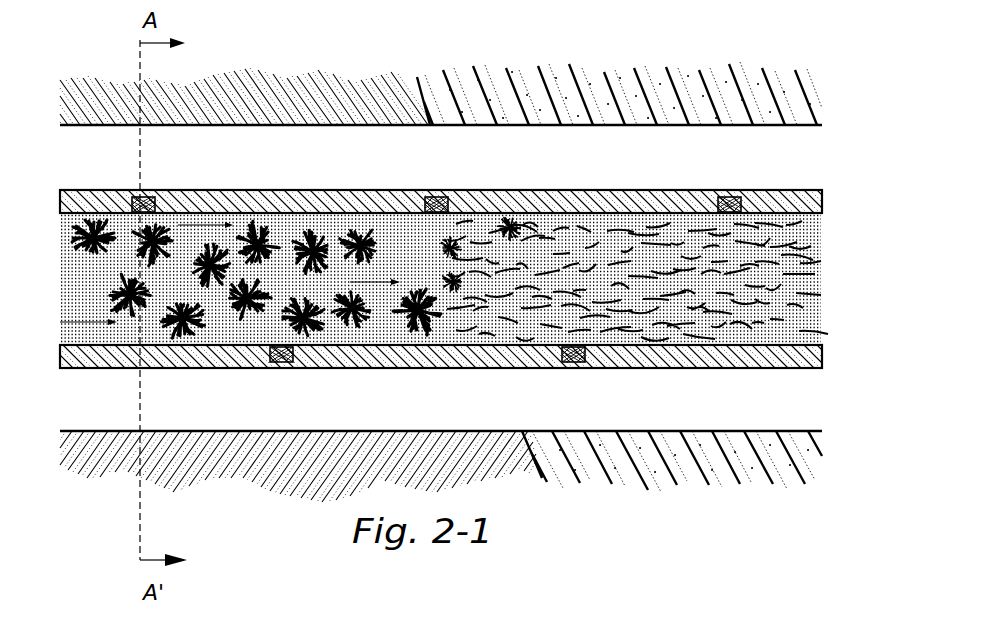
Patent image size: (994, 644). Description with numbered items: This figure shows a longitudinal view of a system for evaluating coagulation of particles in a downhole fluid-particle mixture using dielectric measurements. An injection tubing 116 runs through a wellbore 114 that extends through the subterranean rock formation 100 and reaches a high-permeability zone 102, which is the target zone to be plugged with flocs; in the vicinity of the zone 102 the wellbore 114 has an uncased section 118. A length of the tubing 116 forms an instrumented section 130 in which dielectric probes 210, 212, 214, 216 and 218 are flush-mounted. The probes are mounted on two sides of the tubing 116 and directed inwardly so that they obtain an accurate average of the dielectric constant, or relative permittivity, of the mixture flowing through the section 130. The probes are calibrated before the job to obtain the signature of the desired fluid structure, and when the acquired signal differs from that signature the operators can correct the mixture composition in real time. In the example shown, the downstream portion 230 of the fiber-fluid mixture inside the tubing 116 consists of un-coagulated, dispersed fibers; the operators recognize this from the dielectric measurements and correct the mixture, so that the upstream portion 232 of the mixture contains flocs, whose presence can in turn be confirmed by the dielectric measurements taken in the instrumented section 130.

The subterranean rock formation 100 is at (274, 104).
The high-permeability zone 102 is at (709, 115).
The wellbore 114 is at (323, 125).
The injection tubing 116 is at (432, 358).
The uncased section 118 is at (683, 432).
The instrumented section 130 is at (284, 171).
The dielectric probe 210 is at (137, 194).
The dielectric probe 212 is at (283, 364).
The dielectric probe 214 is at (440, 193).
The dielectric probe 216 is at (571, 365).
The dielectric probe 218 is at (723, 194).
The downstream portion 230 is at (738, 334).
The upstream portion 232 is at (120, 323).